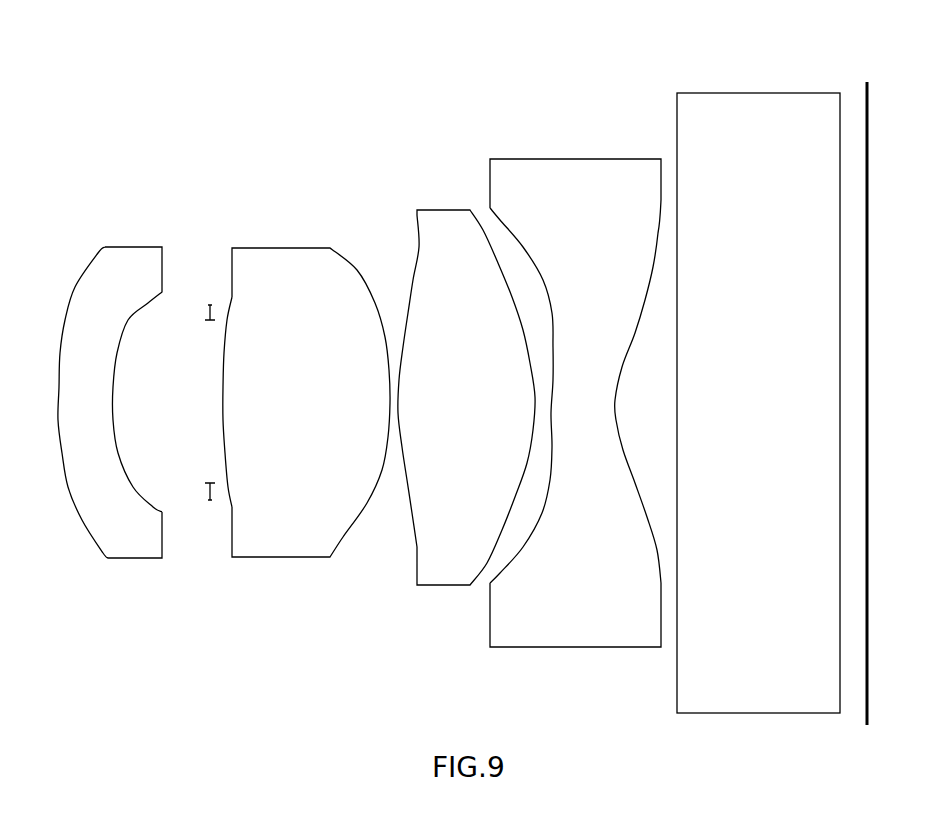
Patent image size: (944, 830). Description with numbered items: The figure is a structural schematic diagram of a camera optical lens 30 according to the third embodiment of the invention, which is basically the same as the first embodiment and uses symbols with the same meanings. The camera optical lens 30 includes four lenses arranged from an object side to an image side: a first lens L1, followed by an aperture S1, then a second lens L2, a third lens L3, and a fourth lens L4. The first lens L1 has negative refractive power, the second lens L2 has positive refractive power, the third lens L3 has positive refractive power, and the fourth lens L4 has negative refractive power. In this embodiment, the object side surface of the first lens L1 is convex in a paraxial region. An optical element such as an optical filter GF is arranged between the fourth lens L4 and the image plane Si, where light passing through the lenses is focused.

The camera optical lens 30 is at (441, 41).
The first lens L1 is at (110, 392).
The aperture S1 is at (208, 392).
The second lens L2 is at (306, 392).
The third lens L3 is at (466, 387).
The fourth lens L4 is at (575, 392).
The optical filter GF is at (758, 392).
The image plane Si is at (864, 393).